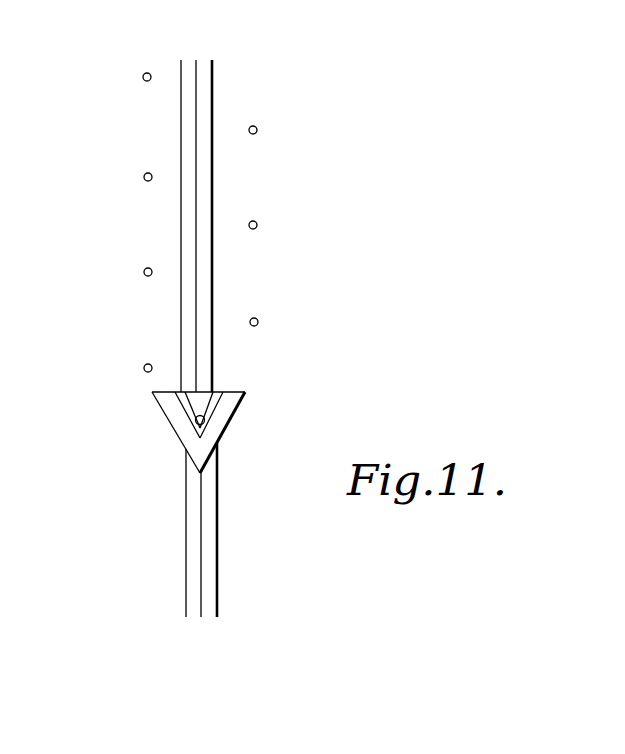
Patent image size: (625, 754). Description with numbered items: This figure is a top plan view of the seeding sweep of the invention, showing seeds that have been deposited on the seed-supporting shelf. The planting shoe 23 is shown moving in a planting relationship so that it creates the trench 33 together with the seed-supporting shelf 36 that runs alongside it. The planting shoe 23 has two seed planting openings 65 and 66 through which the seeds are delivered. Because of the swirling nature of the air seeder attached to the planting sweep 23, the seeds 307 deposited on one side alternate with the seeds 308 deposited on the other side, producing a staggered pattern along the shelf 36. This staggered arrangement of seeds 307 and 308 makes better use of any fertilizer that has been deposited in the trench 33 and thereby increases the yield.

The trench 33 is at (197, 75).
The seed-supporting shelf 36 is at (212, 103).
The seeds 307 is at (256, 128).
The seeds 308 is at (144, 80).
The planting shoe 23 is at (175, 428).
The seed planting opening 65 is at (174, 392).
The seed planting opening 66 is at (220, 392).